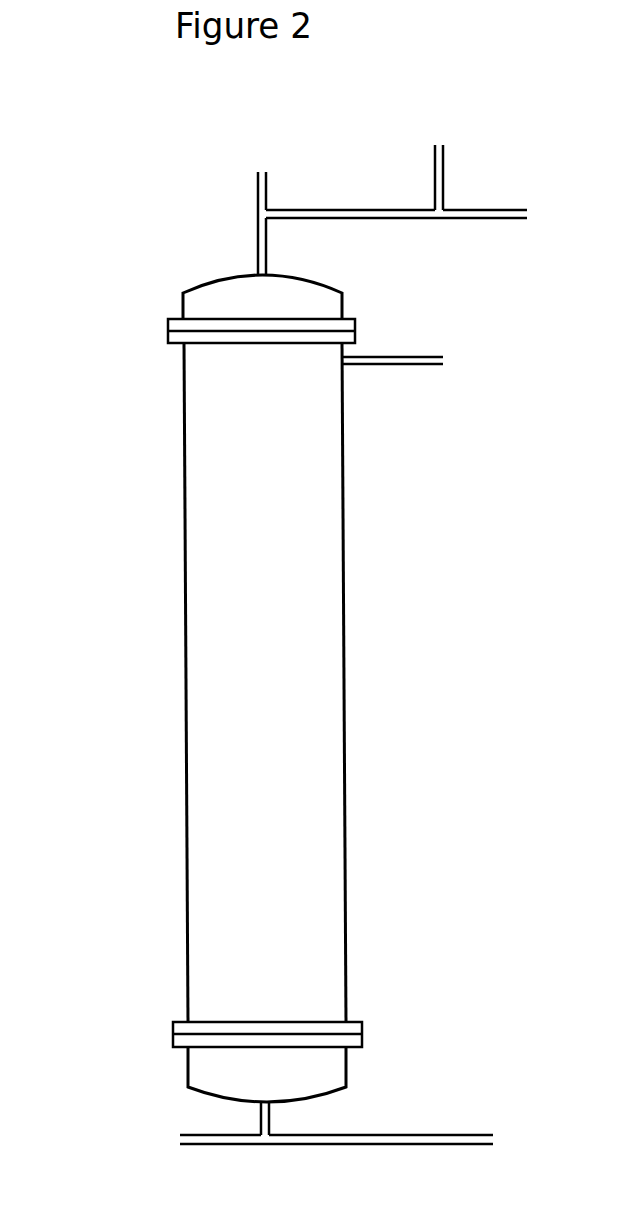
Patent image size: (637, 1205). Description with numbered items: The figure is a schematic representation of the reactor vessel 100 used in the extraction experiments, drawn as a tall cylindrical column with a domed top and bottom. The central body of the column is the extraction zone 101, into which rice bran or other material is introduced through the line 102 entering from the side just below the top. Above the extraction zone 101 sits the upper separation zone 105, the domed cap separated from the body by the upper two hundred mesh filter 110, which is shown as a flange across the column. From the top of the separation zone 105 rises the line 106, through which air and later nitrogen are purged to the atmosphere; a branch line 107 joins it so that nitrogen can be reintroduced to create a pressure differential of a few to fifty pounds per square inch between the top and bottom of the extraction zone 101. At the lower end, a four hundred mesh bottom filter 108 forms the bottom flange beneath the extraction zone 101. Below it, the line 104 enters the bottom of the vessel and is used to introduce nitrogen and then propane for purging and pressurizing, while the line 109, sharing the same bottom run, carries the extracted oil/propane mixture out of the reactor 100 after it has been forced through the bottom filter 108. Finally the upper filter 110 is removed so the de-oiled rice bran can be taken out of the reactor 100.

The reactor vessel 100 is at (170, 653).
The extraction zone 101 is at (265, 682).
The line 102 is at (417, 359).
The line 104 is at (229, 1131).
The upper separation zone 105 is at (262, 297).
The line 106 is at (262, 204).
The line 107 is at (396, 163).
The 400 mesh bottom filter 108 is at (156, 1032).
The line 109 is at (410, 1141).
The upper 200 mesh filter 110 is at (154, 331).